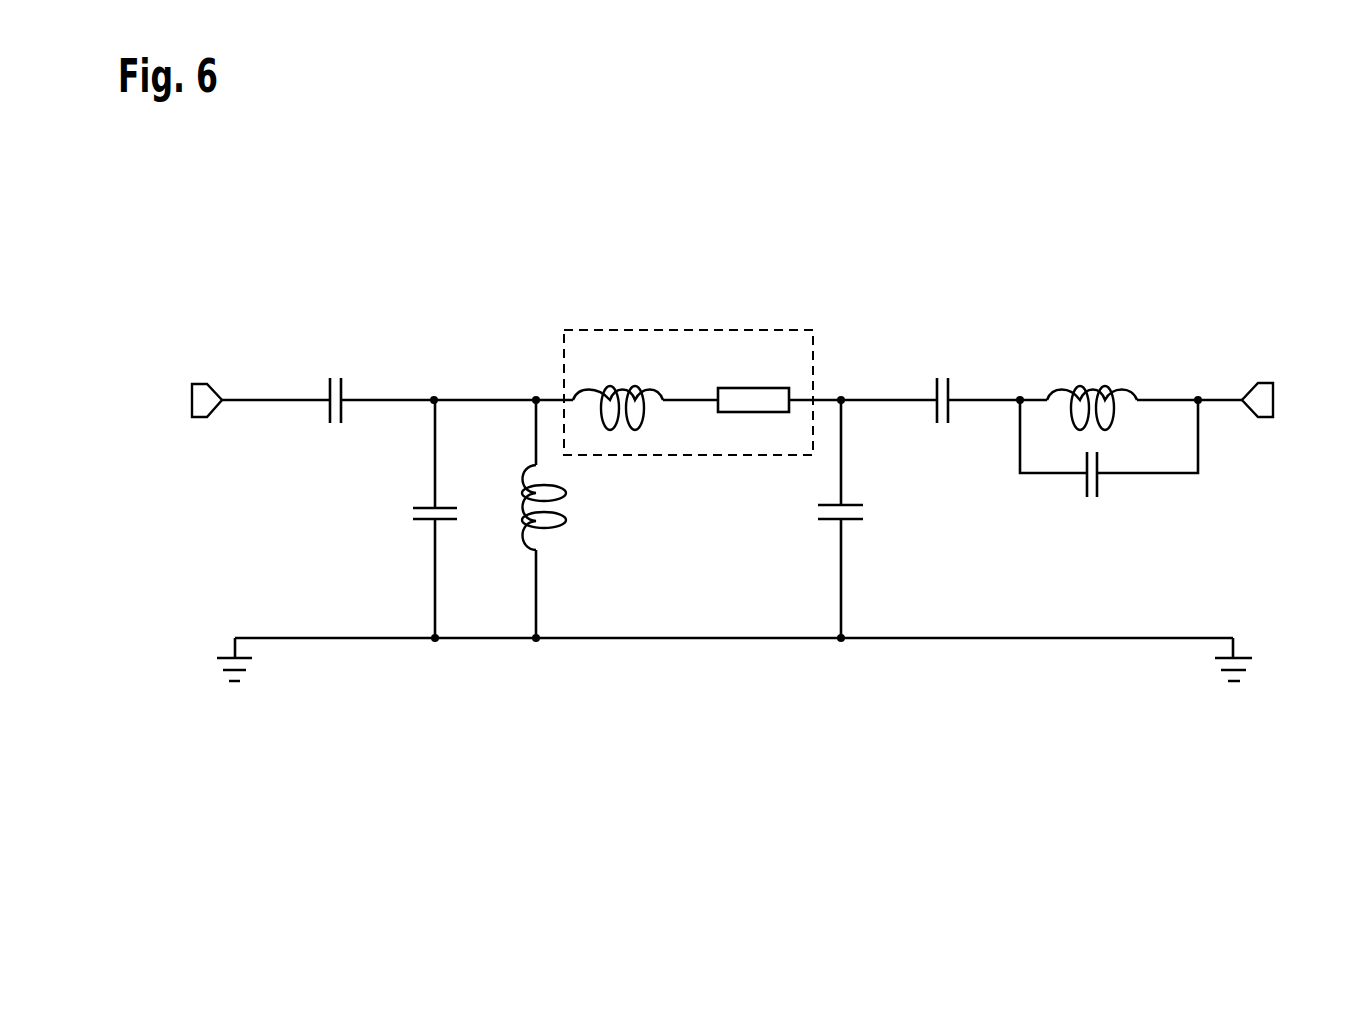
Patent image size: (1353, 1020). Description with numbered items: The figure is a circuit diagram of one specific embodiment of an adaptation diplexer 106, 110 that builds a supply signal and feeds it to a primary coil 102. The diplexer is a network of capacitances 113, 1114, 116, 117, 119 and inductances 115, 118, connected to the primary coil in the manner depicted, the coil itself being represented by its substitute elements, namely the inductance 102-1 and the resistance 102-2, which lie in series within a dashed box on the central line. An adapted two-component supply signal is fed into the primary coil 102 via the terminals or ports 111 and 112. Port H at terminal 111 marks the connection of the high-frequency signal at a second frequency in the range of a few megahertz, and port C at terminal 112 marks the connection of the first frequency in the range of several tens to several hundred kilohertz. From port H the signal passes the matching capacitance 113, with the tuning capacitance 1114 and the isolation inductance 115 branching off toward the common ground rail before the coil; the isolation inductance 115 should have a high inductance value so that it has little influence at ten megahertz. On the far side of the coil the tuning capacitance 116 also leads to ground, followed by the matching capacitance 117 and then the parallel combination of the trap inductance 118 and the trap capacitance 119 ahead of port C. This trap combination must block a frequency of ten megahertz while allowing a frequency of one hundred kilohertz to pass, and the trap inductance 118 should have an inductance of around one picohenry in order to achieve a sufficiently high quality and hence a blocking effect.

The adaptation diplexer 106 is at (721, 421).
The filter circuit 110 is at (296, 216).
The terminal 111 is at (192, 384).
The terminal 112 is at (1258, 384).
The capacitance 113 is at (330, 385).
The tuning capacitor Ct 1114 is at (421, 520).
The inductance 115 is at (546, 528).
The primary coil 102 is at (688, 340).
The inductance 102-1 is at (608, 388).
The resistance 102-2 is at (755, 388).
The capacitance 116 is at (851, 519).
The capacitance 117 is at (937, 385).
The inductance 118 is at (1062, 389).
The capacitance 119 is at (1088, 497).